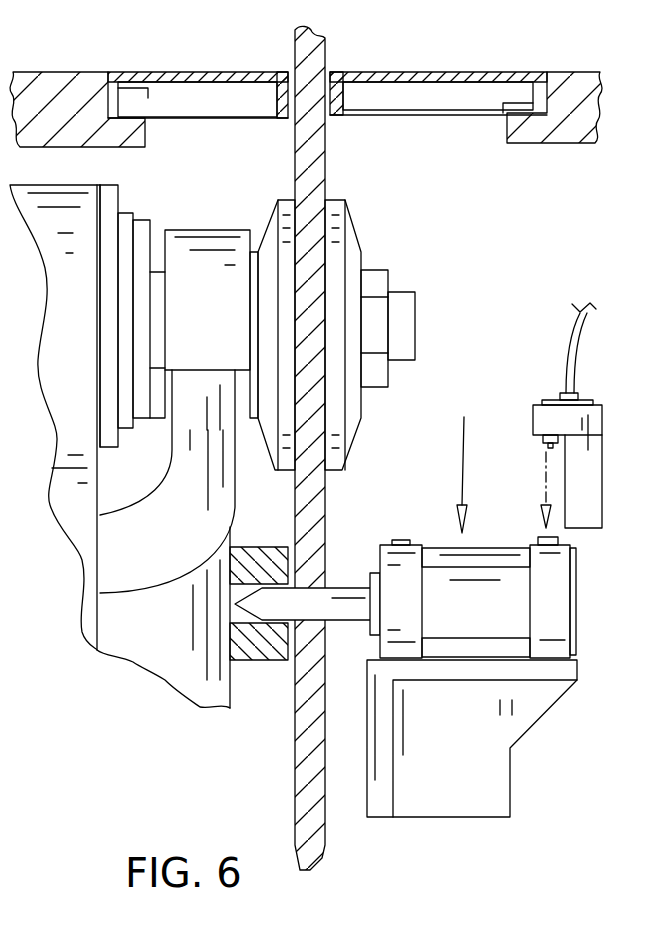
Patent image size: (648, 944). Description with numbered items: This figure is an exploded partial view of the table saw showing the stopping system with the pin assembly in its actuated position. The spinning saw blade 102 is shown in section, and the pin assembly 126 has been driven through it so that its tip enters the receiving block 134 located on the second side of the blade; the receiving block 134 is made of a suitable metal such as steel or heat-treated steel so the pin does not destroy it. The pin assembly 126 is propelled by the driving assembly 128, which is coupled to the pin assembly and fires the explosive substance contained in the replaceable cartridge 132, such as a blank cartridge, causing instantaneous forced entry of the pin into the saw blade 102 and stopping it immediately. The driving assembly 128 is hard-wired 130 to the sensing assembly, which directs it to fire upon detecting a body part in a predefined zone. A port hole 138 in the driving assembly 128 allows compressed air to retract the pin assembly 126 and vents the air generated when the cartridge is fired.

The saw blade 102 is at (330, 53).
The pin assembly 126 is at (273, 612).
The driving assembly 128 is at (468, 458).
The hard-wired connection 130 is at (565, 360).
The replaceable cartridge 132 is at (583, 468).
The receiving block 134 is at (257, 553).
The port hole 138 is at (402, 537).